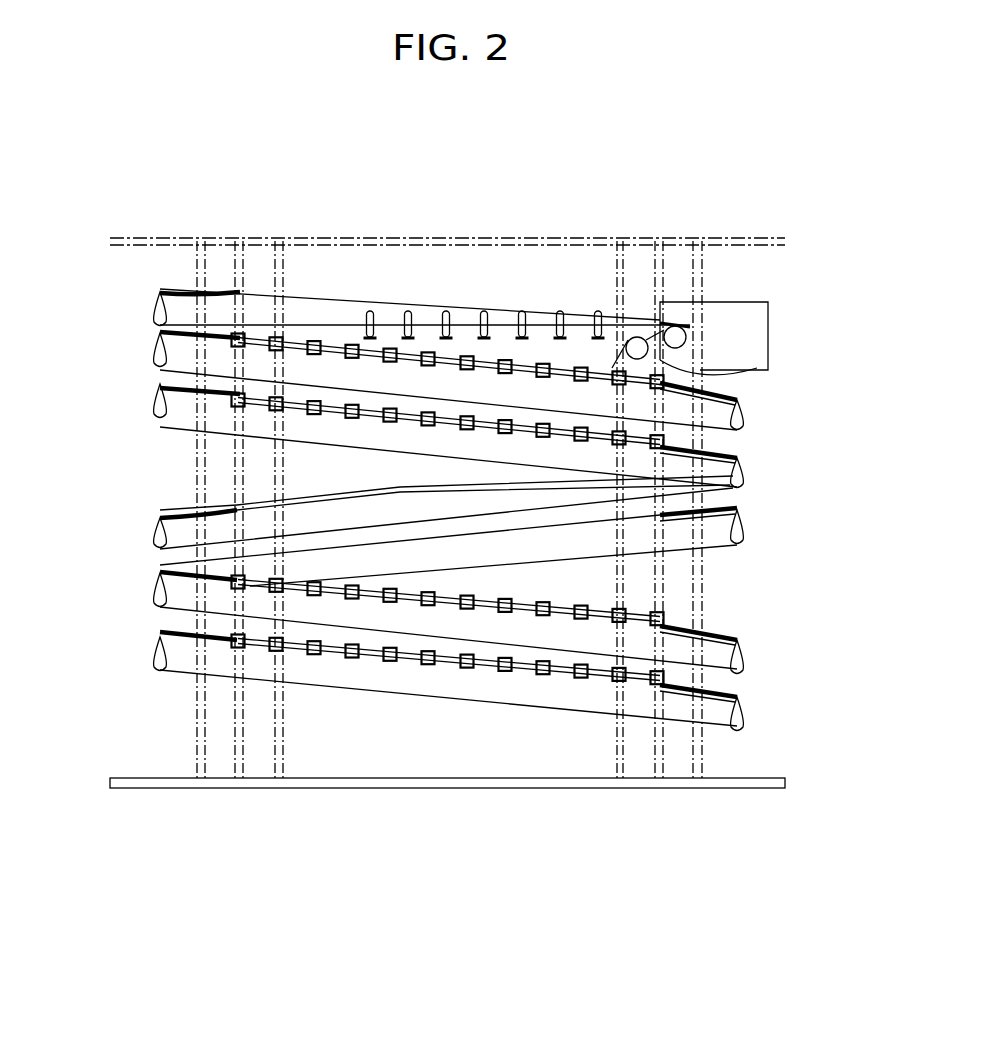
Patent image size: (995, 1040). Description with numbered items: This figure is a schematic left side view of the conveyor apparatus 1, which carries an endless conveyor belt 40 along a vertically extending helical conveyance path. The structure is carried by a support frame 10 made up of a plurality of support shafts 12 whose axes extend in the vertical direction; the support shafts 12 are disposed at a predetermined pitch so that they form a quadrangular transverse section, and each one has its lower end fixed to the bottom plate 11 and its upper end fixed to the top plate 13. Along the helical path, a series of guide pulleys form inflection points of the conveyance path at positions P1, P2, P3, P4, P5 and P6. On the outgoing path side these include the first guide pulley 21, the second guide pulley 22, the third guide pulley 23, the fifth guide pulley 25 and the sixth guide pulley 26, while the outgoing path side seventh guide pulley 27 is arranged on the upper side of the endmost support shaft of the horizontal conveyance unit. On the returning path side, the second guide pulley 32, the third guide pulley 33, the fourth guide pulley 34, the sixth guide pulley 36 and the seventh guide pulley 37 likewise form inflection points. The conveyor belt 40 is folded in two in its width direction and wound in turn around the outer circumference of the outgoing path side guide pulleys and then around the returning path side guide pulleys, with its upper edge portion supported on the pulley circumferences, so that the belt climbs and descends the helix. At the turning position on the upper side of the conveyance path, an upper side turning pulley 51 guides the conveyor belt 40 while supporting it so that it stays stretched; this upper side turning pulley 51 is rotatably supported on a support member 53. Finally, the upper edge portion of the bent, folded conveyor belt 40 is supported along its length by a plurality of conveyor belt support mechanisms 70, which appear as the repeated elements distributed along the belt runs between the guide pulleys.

The conveyor apparatus 1 is at (568, 166).
The support frame 10 is at (488, 236).
The bottom plate 11 is at (425, 790).
The support shafts 12 is at (283, 282).
The top plate 13 is at (415, 236).
The outgoing path side first guide pulley 21 is at (723, 632).
The outgoing path side second guide pulley 22 is at (200, 568).
The outgoing path side third guide pulley 23 is at (160, 512).
The outgoing path side fifth guide pulley 25 is at (740, 388).
The outgoing path side sixth guide pulley 26 is at (202, 330).
The outgoing path side seventh guide pulley 27 is at (163, 290).
The returning path side second guide pulley 32 is at (163, 377).
The returning path side third guide pulley 33 is at (740, 450).
The returning path side fourth guide pulley 34 is at (740, 504).
The returning path side sixth guide pulley 36 is at (160, 626).
The returning path side seventh guide pulley 37 is at (723, 686).
The conveyor belt 40 is at (345, 305).
The upper side turning pulley 51 is at (680, 338).
The support member 53 is at (752, 338).
The conveyor belt support mechanisms 70 is at (357, 580).
The position P1 is at (700, 624).
The position P2 is at (165, 550).
The position P3 is at (205, 512).
The position P4 is at (740, 492).
The position P5 is at (705, 378).
The position P6 is at (183, 314).